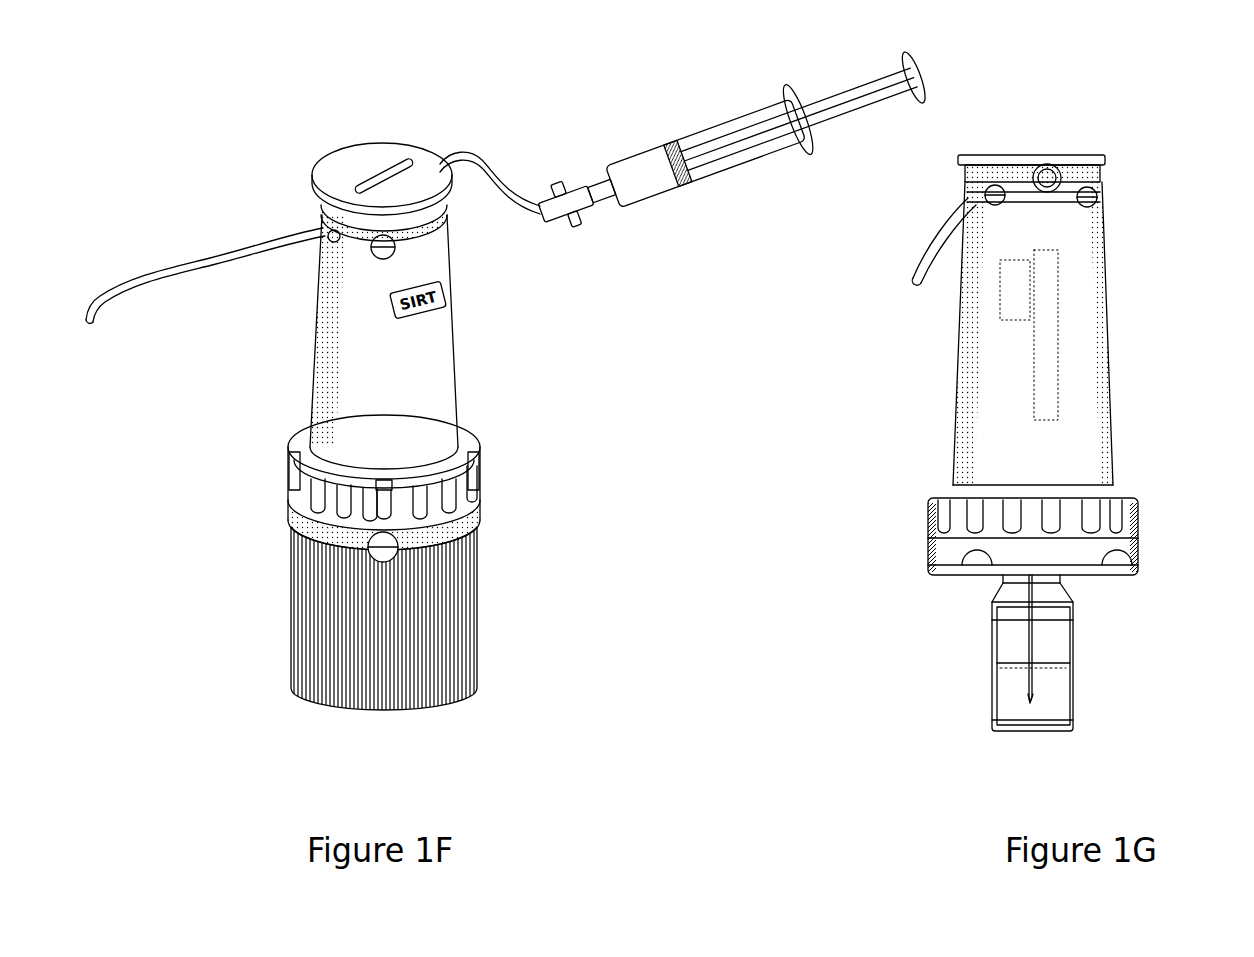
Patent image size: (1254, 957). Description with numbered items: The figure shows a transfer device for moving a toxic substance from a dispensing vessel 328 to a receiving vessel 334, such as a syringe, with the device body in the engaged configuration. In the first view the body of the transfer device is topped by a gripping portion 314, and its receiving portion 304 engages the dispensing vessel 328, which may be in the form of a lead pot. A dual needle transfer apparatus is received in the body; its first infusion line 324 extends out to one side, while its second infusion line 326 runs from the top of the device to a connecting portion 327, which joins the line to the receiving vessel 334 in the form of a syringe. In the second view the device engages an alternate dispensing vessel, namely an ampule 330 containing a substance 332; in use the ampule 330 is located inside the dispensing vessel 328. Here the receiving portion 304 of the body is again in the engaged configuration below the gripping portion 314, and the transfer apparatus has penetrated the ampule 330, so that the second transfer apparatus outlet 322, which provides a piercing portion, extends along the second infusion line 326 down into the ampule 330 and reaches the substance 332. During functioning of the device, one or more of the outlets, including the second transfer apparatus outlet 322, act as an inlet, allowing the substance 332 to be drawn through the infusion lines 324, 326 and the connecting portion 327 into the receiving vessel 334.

In FIG. 1F, the gripping portion 314 is at (407, 160).
In FIG. 1G, the gripping portion 314 is at (1091, 169).
In FIG. 1F, the first infusion line 324 is at (213, 313).
In FIG. 1F, the second infusion line 326 is at (493, 275).
In FIG. 1G, the second infusion line 326 is at (951, 638).
In FIG. 1F, the connecting portion 327 is at (568, 149).
In FIG. 1F, the receiving vessel 334 is at (755, 167).
In FIG. 1F, the receiving portion 304 is at (443, 482).
In FIG. 1G, the receiving portion 304 is at (1078, 531).
In FIG. 1F, the dispensing vessel 328 is at (444, 615).
In FIG. 1G, the ampule 330 is at (1101, 653).
In FIG. 1G, the second transfer apparatus outlet 322 is at (963, 709).
In FIG. 1G, the substance 332 is at (1095, 697).